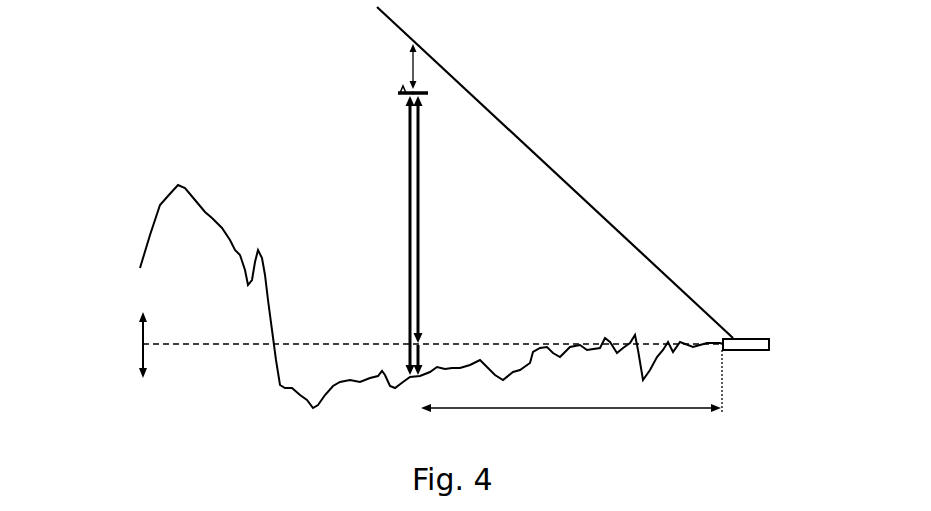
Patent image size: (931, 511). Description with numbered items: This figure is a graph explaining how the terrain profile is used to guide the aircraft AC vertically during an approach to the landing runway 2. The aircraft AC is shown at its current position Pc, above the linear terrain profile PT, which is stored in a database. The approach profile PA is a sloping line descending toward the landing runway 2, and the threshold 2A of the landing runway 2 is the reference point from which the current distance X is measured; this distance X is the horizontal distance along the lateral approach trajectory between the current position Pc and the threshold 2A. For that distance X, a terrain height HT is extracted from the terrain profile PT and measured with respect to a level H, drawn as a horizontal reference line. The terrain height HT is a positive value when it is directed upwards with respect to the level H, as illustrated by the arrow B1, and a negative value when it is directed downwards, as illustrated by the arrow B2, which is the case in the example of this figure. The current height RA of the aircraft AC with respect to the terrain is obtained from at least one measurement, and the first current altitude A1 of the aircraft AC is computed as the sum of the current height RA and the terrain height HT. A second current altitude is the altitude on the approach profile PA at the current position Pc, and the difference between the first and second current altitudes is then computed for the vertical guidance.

The approach profile PA is at (578, 184).
The linear terrain profile PT is at (211, 217).
The aircraft AC is at (405, 100).
The current position Pc is at (384, 92).
The current height RA is at (409, 186).
The first current altitude A1 is at (419, 200).
The terrain height HT is at (421, 364).
The level H is at (161, 346).
The arrow B1 is at (141, 333).
The arrow B2 is at (141, 354).
The current distance X is at (571, 398).
The landing runway 2 is at (755, 352).
The threshold 2A is at (727, 358).